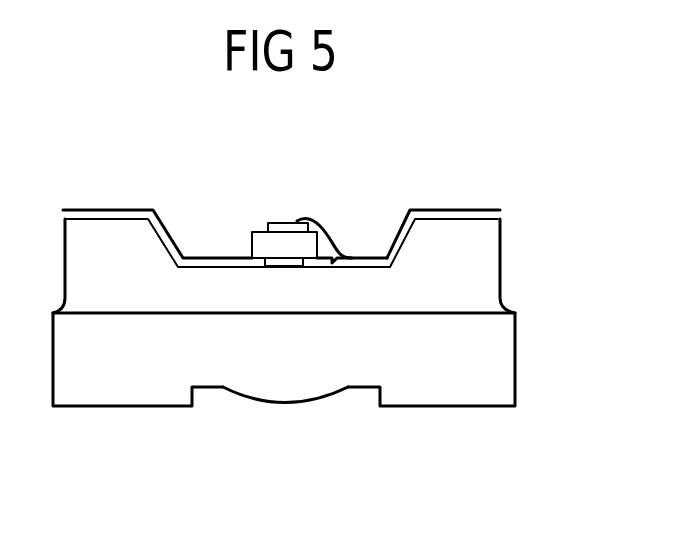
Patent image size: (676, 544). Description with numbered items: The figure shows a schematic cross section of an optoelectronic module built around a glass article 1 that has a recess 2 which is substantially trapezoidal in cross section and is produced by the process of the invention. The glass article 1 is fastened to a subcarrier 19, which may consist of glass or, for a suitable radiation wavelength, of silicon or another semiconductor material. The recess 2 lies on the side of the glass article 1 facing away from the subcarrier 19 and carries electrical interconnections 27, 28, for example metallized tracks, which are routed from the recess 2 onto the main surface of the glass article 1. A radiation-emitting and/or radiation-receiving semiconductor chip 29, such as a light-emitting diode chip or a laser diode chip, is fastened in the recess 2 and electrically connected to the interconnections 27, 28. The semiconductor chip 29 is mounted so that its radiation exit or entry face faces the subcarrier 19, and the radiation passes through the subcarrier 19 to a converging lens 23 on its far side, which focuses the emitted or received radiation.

The glass article 1 is at (473, 237).
The recess 2 is at (362, 238).
The subcarrier 19 is at (495, 350).
The converging lens 23 is at (298, 385).
The electrical interconnection 27 is at (461, 209).
The electrical interconnection 28 is at (108, 213).
The semiconductor chip 29 is at (263, 250).